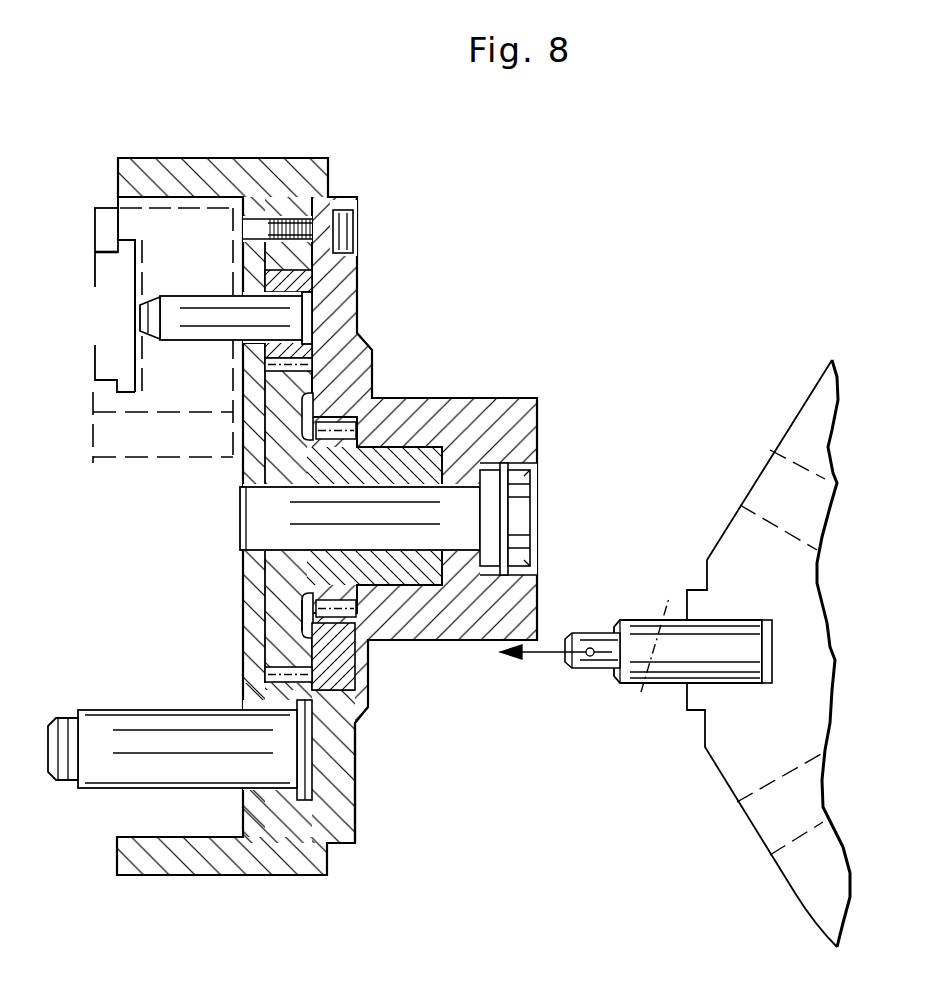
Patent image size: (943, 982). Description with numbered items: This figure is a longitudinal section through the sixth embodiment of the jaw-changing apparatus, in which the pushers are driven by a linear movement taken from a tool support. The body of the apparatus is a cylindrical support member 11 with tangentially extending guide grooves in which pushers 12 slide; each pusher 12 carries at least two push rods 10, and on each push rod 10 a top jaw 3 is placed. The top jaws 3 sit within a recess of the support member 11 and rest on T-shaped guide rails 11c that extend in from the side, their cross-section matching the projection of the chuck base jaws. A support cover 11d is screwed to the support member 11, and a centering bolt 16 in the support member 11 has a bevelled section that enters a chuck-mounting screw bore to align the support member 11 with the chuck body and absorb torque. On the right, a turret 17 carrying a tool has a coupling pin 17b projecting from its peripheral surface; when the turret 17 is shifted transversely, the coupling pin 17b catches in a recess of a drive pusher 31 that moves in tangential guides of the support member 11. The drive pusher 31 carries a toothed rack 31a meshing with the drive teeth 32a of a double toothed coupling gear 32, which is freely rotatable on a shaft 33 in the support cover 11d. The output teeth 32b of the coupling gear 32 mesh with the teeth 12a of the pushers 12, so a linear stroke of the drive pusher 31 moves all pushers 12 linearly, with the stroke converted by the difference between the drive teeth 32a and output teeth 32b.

The top jaw 3 is at (193, 255).
The push rod 10 is at (282, 317).
The cylindrical support member 11 is at (290, 184).
The guide rail 11c is at (112, 287).
The support cover 11d is at (336, 786).
The pusher 12 is at (300, 278).
The teeth of the pushers 12a is at (312, 378).
The centering bolt 16 is at (115, 753).
The turret 17 is at (823, 437).
The coupling pin 17b is at (685, 637).
The drive pusher 31 is at (348, 661).
The toothed rack 31a is at (305, 626).
The double toothed coupling gear 32 is at (305, 628).
The drive teeth 32a is at (356, 425).
The output teeth 32b is at (306, 627).
The shaft 33 is at (462, 512).